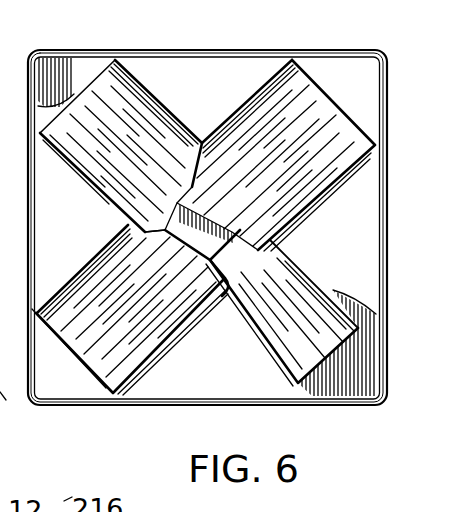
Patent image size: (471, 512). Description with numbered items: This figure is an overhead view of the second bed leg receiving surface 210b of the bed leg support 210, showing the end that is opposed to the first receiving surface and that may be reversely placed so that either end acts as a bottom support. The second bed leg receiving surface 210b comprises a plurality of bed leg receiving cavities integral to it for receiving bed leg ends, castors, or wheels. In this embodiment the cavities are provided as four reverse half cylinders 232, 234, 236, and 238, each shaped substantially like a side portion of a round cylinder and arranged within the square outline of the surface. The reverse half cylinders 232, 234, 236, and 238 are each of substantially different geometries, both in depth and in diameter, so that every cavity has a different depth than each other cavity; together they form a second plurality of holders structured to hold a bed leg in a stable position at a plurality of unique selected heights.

The container tray 210 is at (164, 404).
The second bed leg receiving surface 210b is at (232, 379).
The reverse half cylinder 232 is at (100, 97).
The reverse half cylinder 234 is at (325, 110).
The reverse half cylinder 236 is at (268, 333).
The reverse half cylinder 238 is at (115, 359).